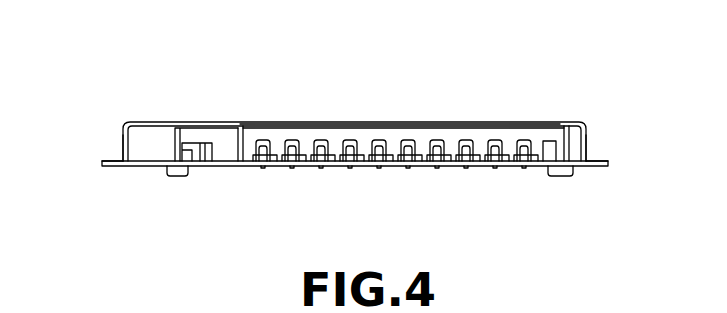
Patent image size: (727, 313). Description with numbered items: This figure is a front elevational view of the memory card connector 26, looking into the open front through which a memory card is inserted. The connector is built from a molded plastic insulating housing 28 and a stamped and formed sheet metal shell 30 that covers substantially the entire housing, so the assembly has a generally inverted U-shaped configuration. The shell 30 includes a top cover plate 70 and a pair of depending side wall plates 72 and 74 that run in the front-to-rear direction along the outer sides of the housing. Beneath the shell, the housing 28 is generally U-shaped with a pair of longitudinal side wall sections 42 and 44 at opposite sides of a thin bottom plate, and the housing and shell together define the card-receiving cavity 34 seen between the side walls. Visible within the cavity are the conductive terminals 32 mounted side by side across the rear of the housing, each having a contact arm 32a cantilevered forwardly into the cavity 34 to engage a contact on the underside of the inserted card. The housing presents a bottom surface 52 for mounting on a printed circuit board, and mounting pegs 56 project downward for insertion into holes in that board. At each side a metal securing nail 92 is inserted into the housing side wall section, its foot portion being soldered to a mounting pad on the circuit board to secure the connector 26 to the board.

The memory card connector 26 is at (494, 104).
The insulating housing 28 is at (162, 170).
The metal shell 30 is at (238, 110).
The conductive terminals 32 is at (378, 140).
The contact arm 32a is at (435, 167).
The cavity 34 is at (314, 122).
The side wall section 42 is at (575, 148).
The side wall section 44 is at (147, 147).
The bottom surface 52 is at (303, 167).
The mounting pegs 56 is at (188, 168).
The top cover plate 70 is at (464, 122).
The side wall plate 72 is at (588, 143).
The side wall plate 74 is at (121, 143).
The metal securing nail 92 is at (107, 178).